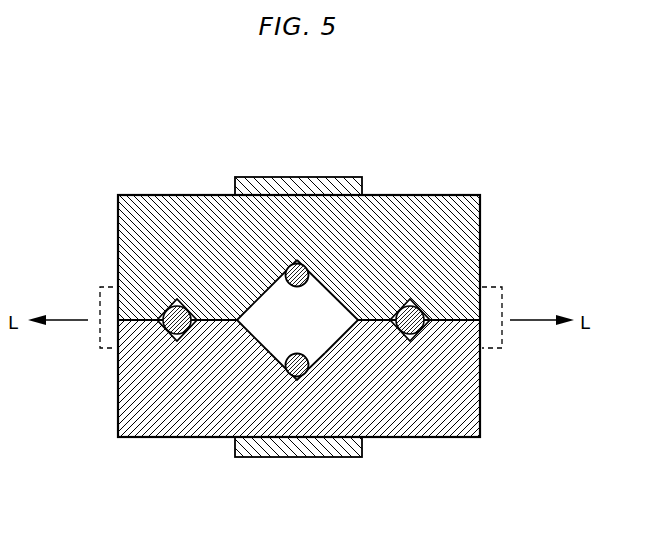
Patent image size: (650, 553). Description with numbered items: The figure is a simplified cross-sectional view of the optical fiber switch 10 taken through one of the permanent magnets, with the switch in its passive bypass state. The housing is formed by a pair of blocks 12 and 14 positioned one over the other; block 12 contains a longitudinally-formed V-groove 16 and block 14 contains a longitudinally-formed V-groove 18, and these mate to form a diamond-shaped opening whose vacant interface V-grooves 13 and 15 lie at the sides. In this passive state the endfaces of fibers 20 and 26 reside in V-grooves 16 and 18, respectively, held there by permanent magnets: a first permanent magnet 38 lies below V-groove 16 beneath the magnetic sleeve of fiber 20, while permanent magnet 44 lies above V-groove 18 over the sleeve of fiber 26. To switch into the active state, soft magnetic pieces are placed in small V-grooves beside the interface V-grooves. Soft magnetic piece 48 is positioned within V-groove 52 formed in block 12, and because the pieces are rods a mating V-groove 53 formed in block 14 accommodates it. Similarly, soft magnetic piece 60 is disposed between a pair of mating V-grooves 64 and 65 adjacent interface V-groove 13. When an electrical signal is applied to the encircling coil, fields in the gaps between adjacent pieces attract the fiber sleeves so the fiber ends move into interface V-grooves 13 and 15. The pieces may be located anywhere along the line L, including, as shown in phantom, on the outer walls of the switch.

The optical fiber switch 10 is at (295, 76).
The block 12 is at (468, 403).
The block 14 is at (468, 260).
The interface V-groove 13 is at (238, 322).
The interface V-groove 15 is at (362, 324).
The V-groove 16 is at (296, 378).
The V-groove 18 is at (296, 263).
The fiber 20 is at (288, 373).
The fiber 26 is at (306, 267).
The permanent magnet 38 is at (362, 452).
The permanent magnet 44 is at (245, 177).
The soft magnetic piece 48 is at (496, 310).
The V-groove 52 is at (410, 342).
The mating V-groove 53 is at (411, 299).
The soft magnetic piece 60 is at (163, 306).
The V-groove 64 is at (178, 341).
The mating V-groove 65 is at (166, 305).